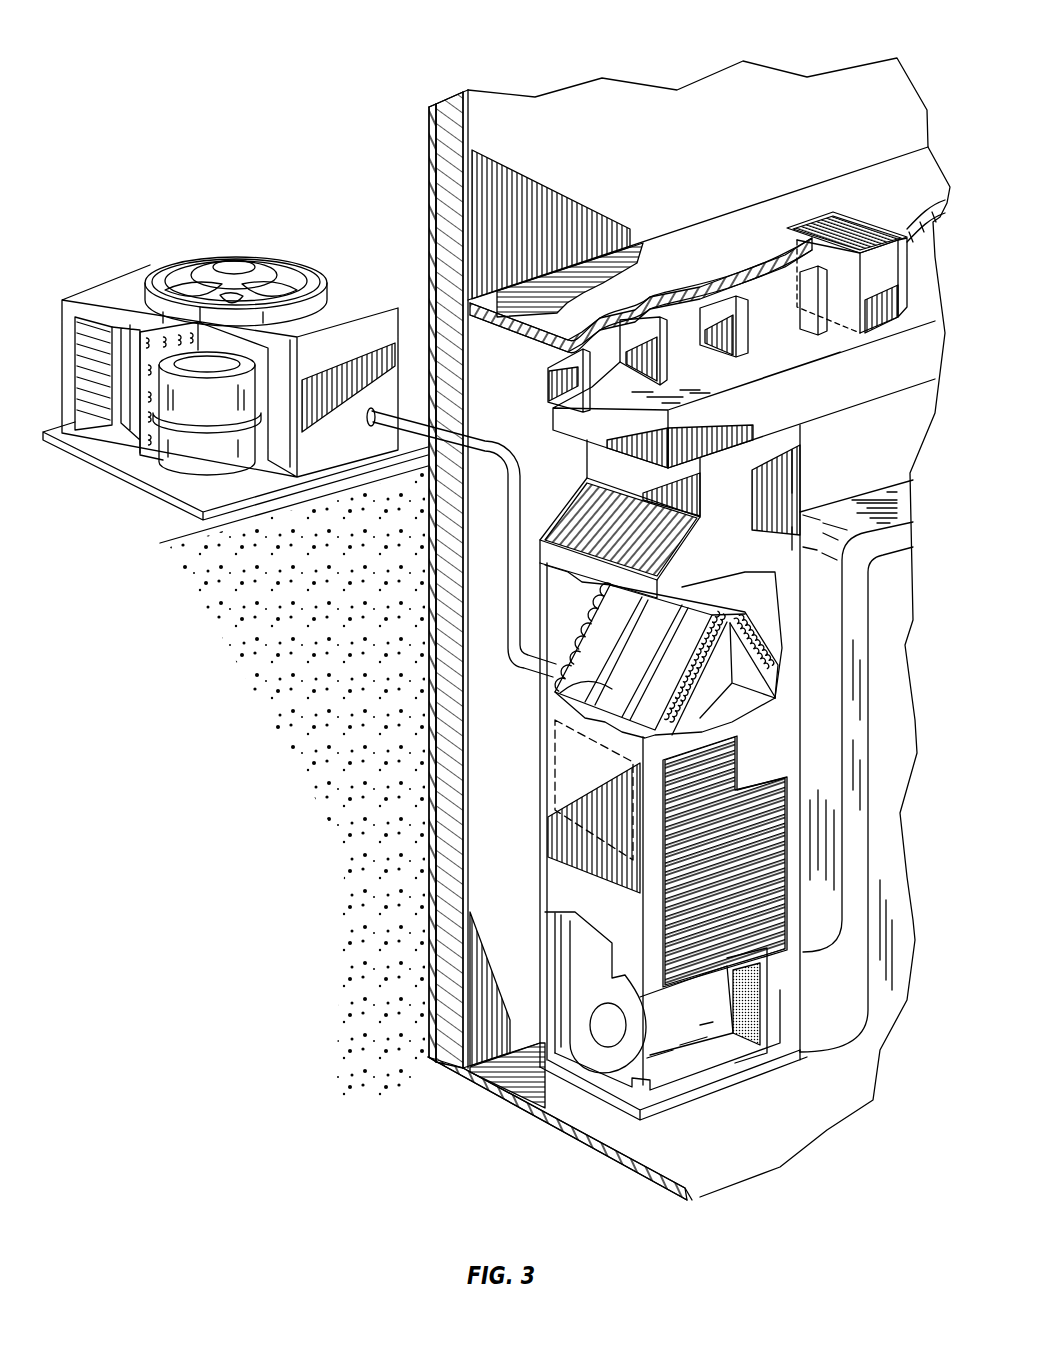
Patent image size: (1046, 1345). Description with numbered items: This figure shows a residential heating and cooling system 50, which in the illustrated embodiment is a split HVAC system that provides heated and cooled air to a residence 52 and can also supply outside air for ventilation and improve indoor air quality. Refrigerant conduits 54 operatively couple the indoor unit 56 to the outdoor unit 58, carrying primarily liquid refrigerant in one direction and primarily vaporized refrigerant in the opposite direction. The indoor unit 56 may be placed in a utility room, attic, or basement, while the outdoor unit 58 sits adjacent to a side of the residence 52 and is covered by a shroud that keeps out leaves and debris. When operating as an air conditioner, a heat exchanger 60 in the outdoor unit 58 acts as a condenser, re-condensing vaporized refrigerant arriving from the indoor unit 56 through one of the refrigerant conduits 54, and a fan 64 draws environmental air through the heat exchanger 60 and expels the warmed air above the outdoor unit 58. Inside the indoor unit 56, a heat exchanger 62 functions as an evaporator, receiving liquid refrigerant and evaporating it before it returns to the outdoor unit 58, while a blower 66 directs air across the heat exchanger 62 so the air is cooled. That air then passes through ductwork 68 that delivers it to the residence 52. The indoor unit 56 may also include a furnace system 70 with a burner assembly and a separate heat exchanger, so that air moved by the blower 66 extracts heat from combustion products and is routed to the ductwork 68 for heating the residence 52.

The residential heating and cooling system 50 is at (349, 32).
The residence 52 is at (593, 98).
The refrigerant conduits 54 is at (505, 518).
The indoor unit 56 is at (524, 822).
The outdoor unit 58 is at (172, 243).
The heat exchanger 60 is at (152, 338).
The heat exchanger 62 is at (557, 694).
The fan 64 is at (263, 257).
The blower 66 is at (597, 1052).
The ductwork 68 is at (880, 292).
The furnace system 70 is at (552, 753).